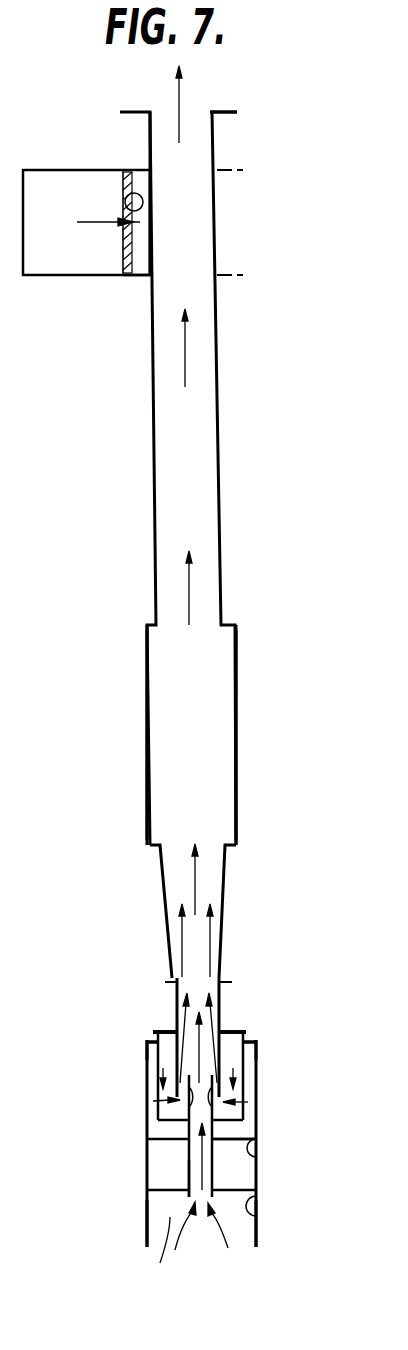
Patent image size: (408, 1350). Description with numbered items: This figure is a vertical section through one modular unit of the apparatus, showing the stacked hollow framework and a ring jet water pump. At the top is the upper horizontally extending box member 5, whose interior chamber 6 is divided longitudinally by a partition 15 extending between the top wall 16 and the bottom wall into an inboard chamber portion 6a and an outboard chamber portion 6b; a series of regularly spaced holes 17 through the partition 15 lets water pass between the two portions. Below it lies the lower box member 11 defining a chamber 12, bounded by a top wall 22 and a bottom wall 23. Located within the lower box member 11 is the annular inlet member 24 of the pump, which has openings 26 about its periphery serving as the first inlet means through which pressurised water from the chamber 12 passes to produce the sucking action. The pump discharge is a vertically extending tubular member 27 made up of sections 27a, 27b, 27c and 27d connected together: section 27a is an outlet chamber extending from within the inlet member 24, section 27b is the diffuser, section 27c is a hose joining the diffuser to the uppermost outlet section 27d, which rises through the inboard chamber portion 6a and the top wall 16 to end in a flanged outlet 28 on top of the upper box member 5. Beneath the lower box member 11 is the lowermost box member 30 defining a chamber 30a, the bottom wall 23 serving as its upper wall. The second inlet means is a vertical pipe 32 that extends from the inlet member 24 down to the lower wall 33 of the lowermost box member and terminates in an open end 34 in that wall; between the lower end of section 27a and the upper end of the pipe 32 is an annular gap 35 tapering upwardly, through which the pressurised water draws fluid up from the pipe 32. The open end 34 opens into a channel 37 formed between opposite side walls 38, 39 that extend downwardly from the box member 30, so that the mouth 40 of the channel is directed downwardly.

The upper box member 5 is at (141, 170).
The chamber 6 is at (135, 265).
The inboard chamber portion 6a is at (226, 243).
The outboard chamber portion 6b is at (55, 265).
The lower box member 11 is at (247, 1040).
The chamber 12 is at (253, 1093).
The partition 15 is at (125, 247).
The top wall 16 is at (96, 170).
The holes 17 is at (125, 200).
The top wall 22 is at (150, 1038).
The bottom wall 23 is at (257, 1153).
The annular inlet member 24 is at (253, 1050).
The openings 26 is at (170, 1083).
The tubular member 27 is at (250, 733).
The outlet chamber section 27a is at (223, 1000).
The diffuser section 27b is at (228, 882).
The hose section 27c is at (236, 652).
The outlet section 27d is at (222, 380).
The flanged outlet 28 is at (228, 114).
The lowermost box member 30 is at (258, 1170).
The chamber 30a is at (160, 1152).
The second inlet pipe 32 is at (192, 1152).
The lower wall 33 is at (257, 1217).
The open end 34 is at (192, 1181).
The annular gap 35 is at (152, 1117).
The channel 37 is at (182, 1248).
The side wall 38 is at (147, 1217).
The side wall 39 is at (260, 1233).
The mouth 40 is at (213, 1243).